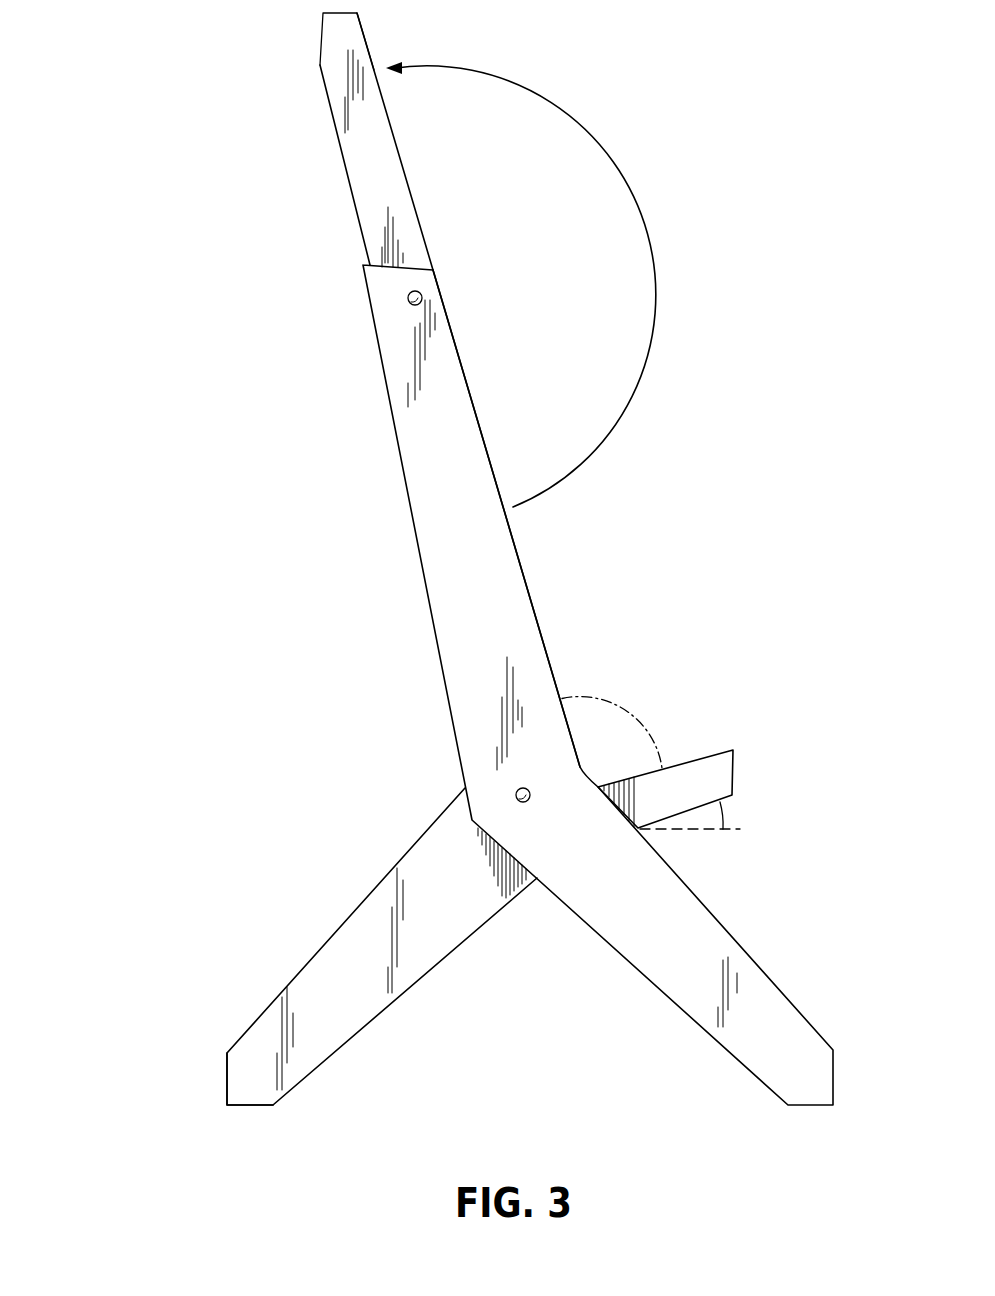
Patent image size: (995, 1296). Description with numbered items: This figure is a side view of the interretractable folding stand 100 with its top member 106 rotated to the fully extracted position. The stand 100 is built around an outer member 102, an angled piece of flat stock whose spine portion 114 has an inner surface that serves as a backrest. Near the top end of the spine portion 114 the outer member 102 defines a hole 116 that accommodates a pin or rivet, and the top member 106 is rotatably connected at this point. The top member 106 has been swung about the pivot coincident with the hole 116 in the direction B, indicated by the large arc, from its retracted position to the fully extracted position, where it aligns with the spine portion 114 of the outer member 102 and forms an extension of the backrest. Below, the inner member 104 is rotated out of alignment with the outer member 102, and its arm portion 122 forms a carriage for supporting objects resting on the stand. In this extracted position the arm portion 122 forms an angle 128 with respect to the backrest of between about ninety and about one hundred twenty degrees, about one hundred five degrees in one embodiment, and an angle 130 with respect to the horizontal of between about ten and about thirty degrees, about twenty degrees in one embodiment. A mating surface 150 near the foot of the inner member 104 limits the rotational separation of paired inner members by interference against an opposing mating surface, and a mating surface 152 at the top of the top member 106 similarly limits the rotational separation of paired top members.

The interretractable folding stand 100 is at (190, 240).
The outer member 102 is at (437, 553).
The inner member 104 is at (367, 922).
The top member 106 is at (377, 183).
The spine portion 114 is at (549, 568).
The hole 116 is at (418, 302).
The arm portion 122 is at (732, 740).
The angle 128 is at (639, 714).
The angle 130 is at (730, 810).
The mating surface 150 is at (225, 1090).
The mating surface 152 is at (323, 43).
The direction B is at (521, 284).